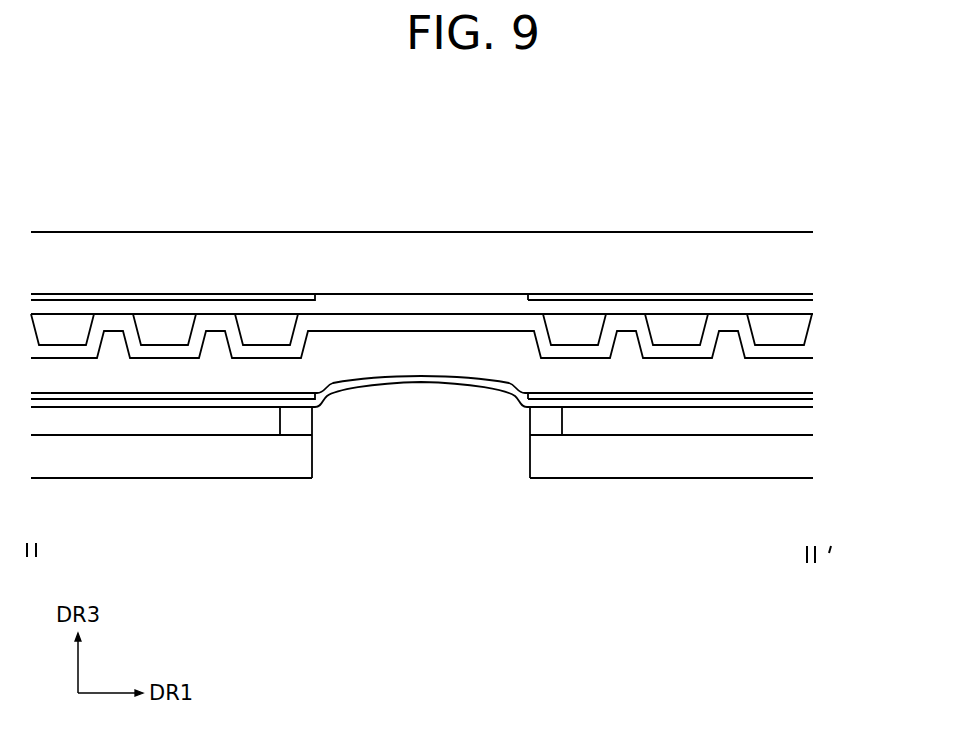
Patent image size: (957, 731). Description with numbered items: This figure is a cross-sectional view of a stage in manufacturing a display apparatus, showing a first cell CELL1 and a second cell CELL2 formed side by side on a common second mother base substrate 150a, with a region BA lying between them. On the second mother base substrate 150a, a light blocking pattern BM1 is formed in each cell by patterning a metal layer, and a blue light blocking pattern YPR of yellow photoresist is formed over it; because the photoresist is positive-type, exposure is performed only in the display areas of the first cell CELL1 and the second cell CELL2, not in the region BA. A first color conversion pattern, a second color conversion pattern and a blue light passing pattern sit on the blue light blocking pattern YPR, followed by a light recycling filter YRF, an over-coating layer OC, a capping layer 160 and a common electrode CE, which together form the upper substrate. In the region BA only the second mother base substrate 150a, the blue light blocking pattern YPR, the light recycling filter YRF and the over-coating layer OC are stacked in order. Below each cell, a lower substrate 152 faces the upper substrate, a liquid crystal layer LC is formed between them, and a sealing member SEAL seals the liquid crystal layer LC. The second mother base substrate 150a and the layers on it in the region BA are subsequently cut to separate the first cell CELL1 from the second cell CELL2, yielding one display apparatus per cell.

The second mother base substrate 150a is at (805, 255).
The light blocking pattern BM1 is at (803, 302).
The blue light blocking pattern YPR is at (803, 311).
The light recycling filter YRF is at (803, 352).
The over-coating layer OC is at (803, 380).
The capping layer 160 is at (803, 400).
The common electrode CE is at (803, 410).
The sealing member SEAL is at (292, 427).
The liquid crystal layer LC is at (195, 425).
The lower substrate 152 is at (112, 468).
The first cell CELL1 is at (31, 214).
The region between the first cell and the second cell BA is at (320, 214).
The second cell CELL2 is at (533, 214).